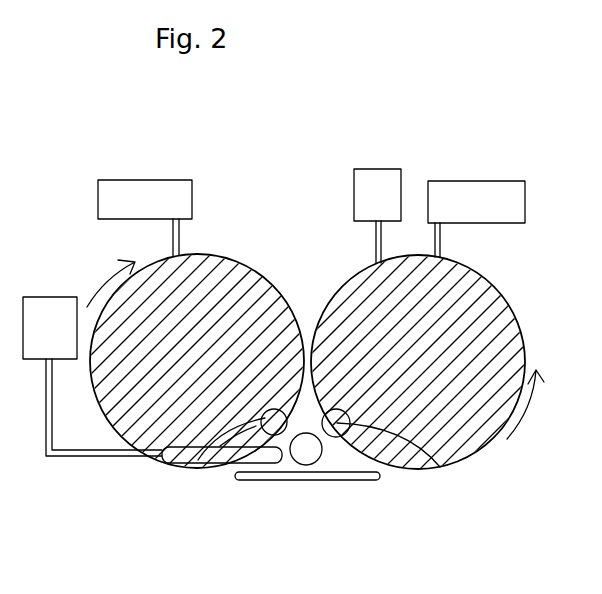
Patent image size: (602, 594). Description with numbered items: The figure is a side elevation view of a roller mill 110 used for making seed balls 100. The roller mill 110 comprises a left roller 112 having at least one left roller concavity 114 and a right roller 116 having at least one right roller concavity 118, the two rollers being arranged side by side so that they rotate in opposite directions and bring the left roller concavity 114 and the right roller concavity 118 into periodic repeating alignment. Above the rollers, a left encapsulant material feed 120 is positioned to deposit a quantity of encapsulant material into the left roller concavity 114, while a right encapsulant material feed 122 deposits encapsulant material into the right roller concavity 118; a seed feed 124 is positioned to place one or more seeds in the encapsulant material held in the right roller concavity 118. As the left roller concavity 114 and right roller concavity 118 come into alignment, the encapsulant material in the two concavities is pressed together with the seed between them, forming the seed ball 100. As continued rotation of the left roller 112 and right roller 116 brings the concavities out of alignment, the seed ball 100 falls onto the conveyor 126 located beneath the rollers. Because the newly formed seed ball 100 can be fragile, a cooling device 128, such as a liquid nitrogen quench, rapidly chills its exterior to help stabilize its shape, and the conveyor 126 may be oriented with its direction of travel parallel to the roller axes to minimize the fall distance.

The seed ball 100 is at (306, 457).
The roller mill 110 is at (505, 115).
The left roller 112 is at (115, 405).
The left roller concavity 114 is at (203, 450).
The right roller 116 is at (477, 433).
The right roller concavity 118 is at (438, 463).
The left encapsulant material feed 120 is at (145, 188).
The right encapsulant material feed 122 is at (505, 193).
The seed feed 124 is at (368, 177).
The conveyor 126 is at (368, 479).
The cooling device 128 is at (222, 455).